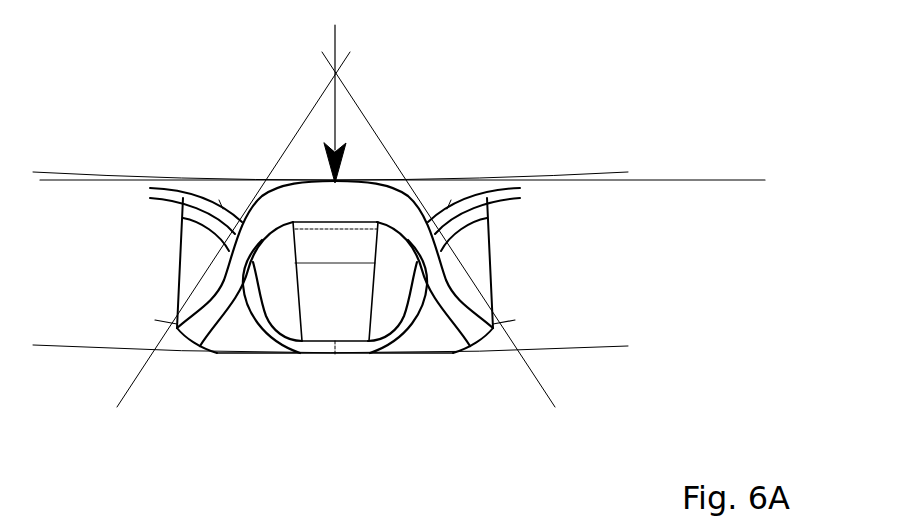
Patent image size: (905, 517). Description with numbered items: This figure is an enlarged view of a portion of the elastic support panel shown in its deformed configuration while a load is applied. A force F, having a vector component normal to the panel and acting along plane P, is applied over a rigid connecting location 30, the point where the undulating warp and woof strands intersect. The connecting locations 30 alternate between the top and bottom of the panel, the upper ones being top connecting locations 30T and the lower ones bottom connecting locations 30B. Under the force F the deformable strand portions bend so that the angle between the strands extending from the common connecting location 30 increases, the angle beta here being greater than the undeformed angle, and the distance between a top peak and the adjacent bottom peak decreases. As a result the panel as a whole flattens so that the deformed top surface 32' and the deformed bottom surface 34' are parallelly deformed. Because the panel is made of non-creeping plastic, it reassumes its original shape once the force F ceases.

The rigid connecting location 30 is at (306, 285).
The top connecting location 30T is at (266, 208).
The bottom connecting location 30B is at (318, 355).
The deformed top surface 32' is at (340, 149).
The deformed bottom surface 34' is at (355, 371).
The plane P is at (713, 179).
The force F is at (346, 100).